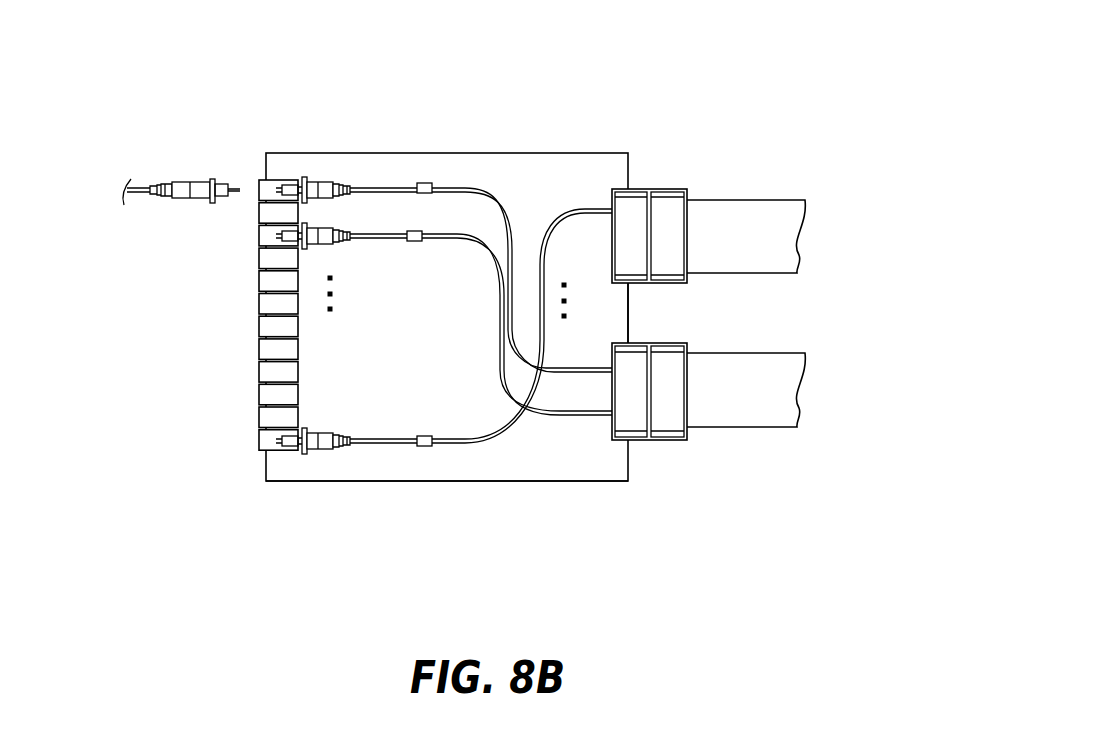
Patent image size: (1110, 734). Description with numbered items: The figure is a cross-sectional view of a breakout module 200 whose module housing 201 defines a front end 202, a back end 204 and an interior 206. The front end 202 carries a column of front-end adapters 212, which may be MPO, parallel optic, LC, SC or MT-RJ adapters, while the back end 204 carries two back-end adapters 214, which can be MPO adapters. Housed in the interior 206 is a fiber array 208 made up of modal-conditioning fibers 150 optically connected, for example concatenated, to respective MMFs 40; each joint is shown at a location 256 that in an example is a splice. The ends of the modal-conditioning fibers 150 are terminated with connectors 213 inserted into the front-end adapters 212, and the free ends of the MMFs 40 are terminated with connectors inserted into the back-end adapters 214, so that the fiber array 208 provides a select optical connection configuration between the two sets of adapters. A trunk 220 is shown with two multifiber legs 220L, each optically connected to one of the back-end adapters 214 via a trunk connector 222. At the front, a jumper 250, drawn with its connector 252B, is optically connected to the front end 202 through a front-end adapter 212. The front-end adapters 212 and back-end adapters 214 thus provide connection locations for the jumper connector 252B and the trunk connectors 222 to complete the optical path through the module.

The breakout module 200 is at (552, 70).
The module housing 201 is at (573, 153).
The front end 202 is at (247, 272).
The back end 204 is at (628, 307).
The interior 206 is at (380, 462).
The fiber array 208 is at (493, 455).
The front-end adapter 212 is at (272, 162).
The connector 213 is at (345, 248).
The back-end adapter 214 is at (635, 188).
The trunk 220 is at (745, 301).
The multifiber leg 220L is at (753, 200).
The trunk connector 222 is at (670, 188).
The jumper 250 is at (137, 155).
The connector 252B is at (200, 185).
The modal-conditioning fiber 150 is at (349, 327).
The splice 256 is at (411, 231).
The MMF 40 is at (481, 325).